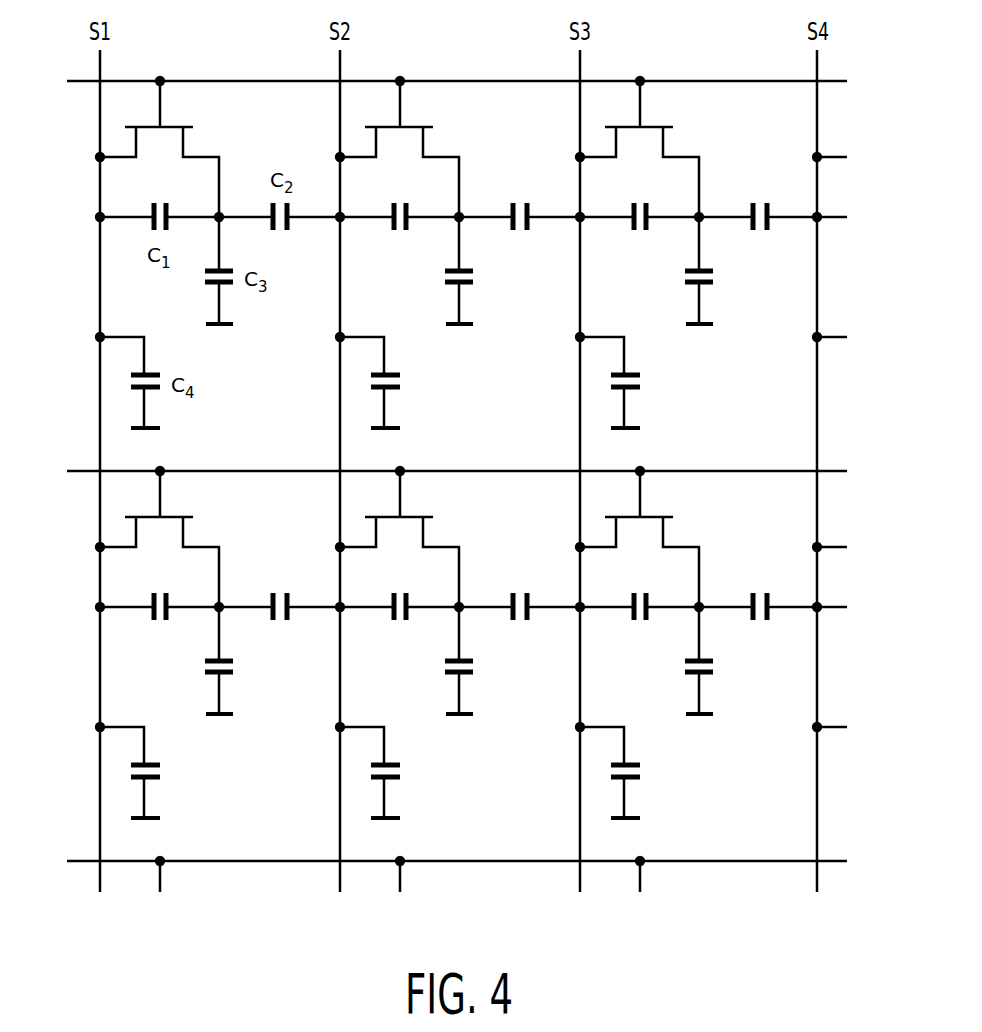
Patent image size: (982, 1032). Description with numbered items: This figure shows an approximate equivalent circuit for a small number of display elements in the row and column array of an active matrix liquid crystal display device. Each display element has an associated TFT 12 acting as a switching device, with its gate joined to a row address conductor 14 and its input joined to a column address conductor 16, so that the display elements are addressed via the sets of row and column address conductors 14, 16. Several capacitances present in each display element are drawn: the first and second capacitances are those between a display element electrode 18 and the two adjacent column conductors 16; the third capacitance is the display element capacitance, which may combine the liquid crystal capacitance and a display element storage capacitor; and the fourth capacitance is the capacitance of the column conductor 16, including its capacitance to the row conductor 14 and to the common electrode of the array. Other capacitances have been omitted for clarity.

The TFT 12 is at (145, 127).
The row address conductor 14 is at (765, 81).
The column address conductor 16 is at (100, 672).
The display element electrode 18 is at (205, 271).